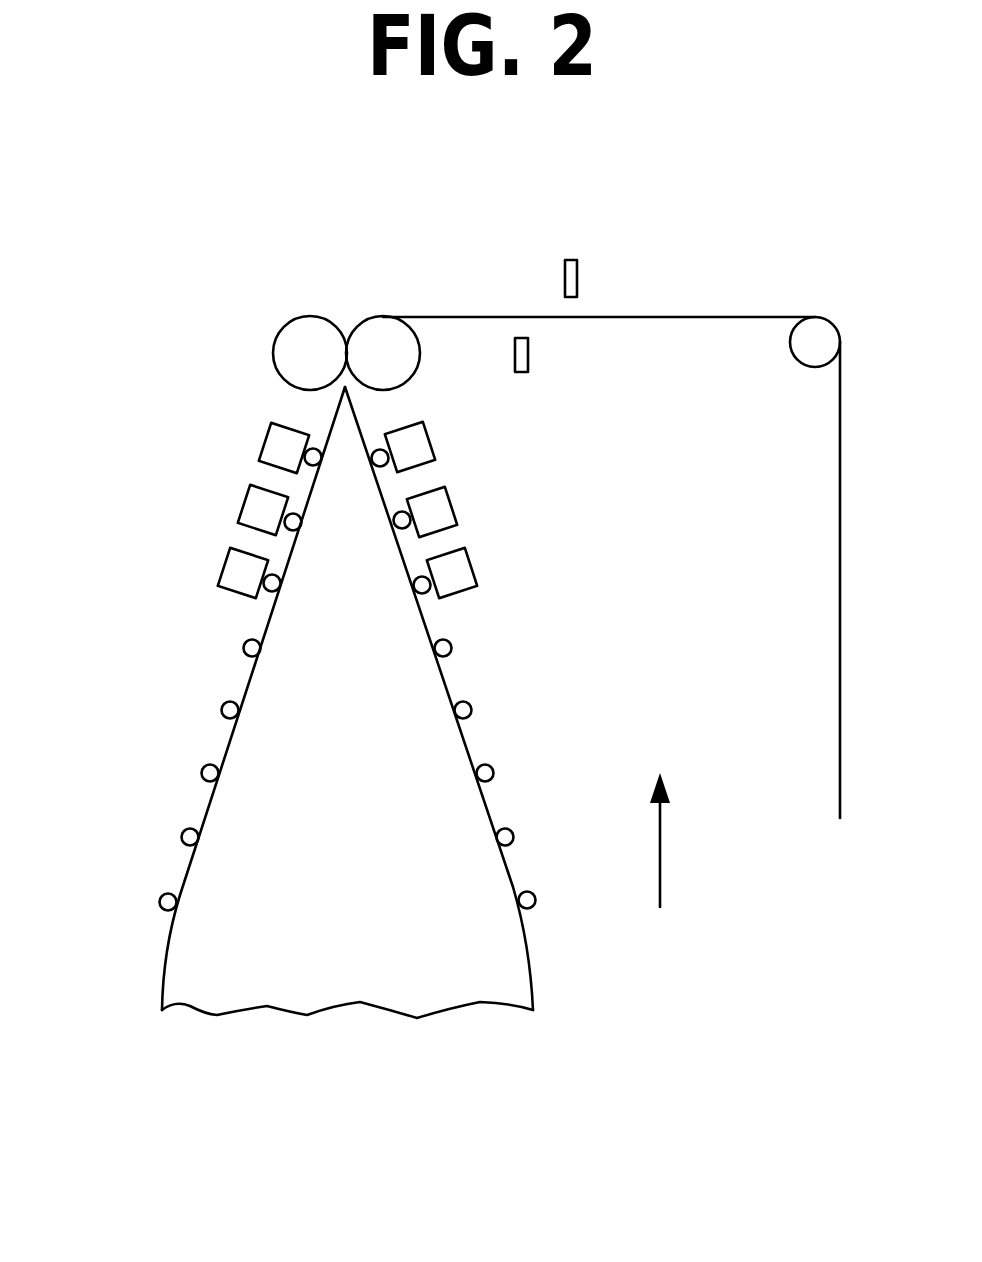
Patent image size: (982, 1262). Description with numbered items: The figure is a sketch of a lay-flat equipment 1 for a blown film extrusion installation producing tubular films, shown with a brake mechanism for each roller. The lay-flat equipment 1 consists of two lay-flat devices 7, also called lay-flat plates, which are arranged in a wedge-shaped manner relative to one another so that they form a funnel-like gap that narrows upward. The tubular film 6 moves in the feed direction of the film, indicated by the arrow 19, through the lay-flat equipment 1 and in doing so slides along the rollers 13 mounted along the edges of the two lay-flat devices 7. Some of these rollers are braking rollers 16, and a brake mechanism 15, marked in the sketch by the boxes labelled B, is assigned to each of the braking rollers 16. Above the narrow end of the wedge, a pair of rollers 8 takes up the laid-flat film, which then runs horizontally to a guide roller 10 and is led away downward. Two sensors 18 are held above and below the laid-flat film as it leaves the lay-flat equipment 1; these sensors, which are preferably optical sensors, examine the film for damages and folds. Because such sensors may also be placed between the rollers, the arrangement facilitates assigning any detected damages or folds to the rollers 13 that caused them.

The lay-flat equipment 1 is at (158, 549).
The tubular film 6 is at (420, 998).
The lay-flat device 7 is at (232, 745).
The feed rollers 8 is at (377, 328).
The guide roller 10 is at (822, 332).
The rollers 13 is at (611, 567).
The brake mechanism 15 is at (265, 435).
The braking rollers 16 is at (287, 430).
The sensors 18 is at (577, 257).
The arrow 19 is at (660, 842).